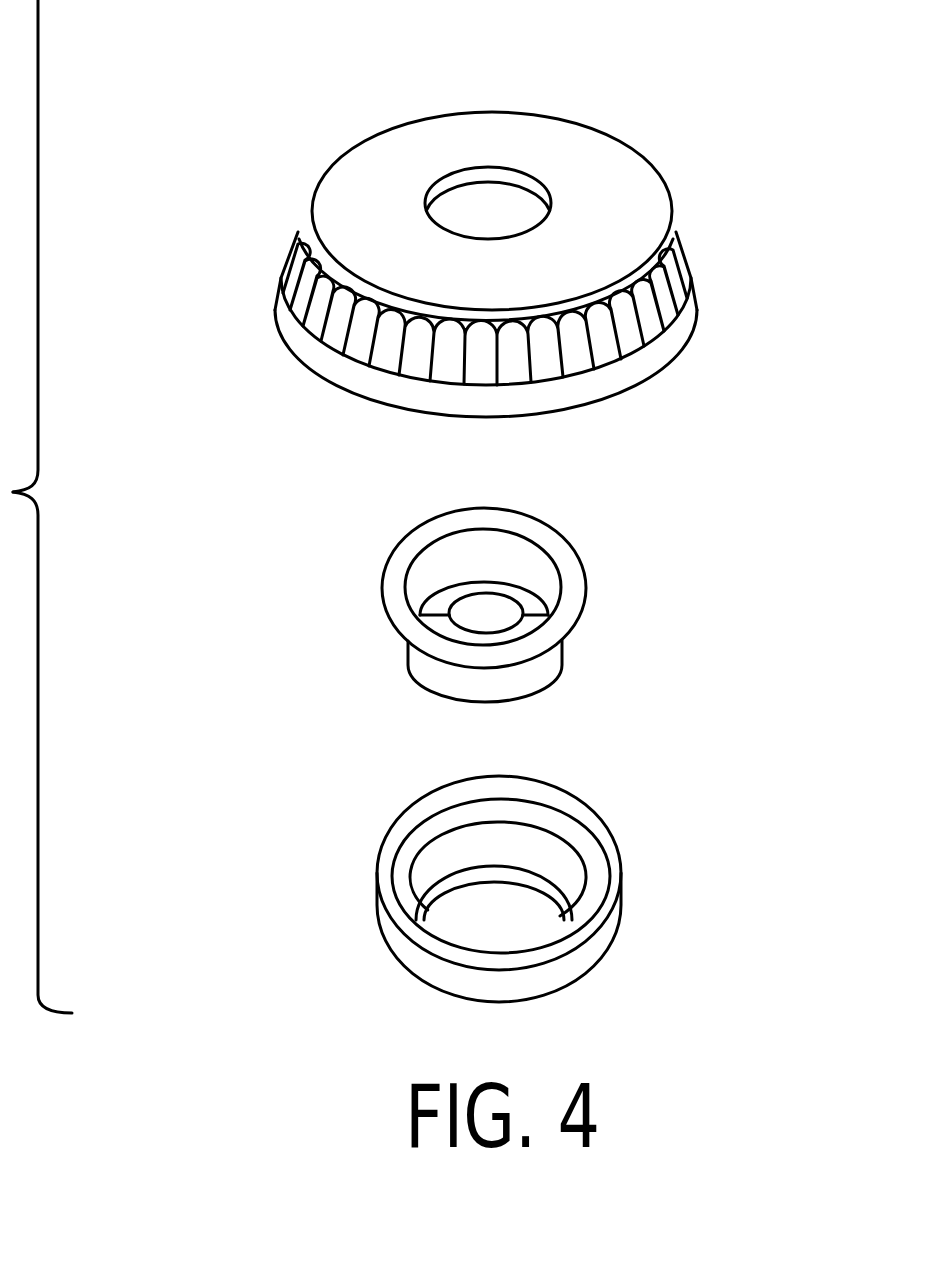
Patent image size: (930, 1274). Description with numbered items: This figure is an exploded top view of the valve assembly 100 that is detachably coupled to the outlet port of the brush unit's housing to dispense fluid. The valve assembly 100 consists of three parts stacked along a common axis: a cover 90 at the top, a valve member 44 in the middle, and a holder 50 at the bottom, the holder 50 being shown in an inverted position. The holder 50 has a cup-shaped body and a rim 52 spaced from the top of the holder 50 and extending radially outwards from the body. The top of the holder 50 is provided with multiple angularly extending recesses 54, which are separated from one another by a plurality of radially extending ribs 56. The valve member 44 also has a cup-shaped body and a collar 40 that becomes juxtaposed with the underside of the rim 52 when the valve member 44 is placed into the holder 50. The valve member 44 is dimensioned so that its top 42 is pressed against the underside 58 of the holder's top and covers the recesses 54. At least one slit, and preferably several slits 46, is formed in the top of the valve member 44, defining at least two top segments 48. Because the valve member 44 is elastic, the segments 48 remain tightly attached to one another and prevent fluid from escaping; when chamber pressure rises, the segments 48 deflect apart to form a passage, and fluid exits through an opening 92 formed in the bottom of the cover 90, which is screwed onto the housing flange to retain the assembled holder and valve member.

The valve assembly 100 is at (396, 216).
The cover 90 is at (310, 248).
The opening 92 is at (488, 197).
The valve member 44 is at (427, 592).
The collar 40 is at (397, 597).
The top segments 48 is at (460, 593).
The slits 46 is at (528, 610).
The top of valve member 42 is at (528, 698).
The holder 50 is at (443, 860).
The rim 52 is at (568, 805).
The recesses 54 is at (443, 880).
The ribs 56 is at (487, 880).
The underside of holder top 58 is at (528, 913).